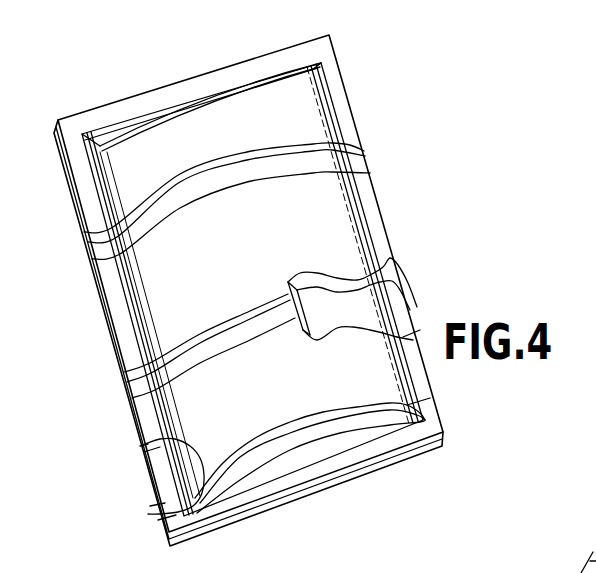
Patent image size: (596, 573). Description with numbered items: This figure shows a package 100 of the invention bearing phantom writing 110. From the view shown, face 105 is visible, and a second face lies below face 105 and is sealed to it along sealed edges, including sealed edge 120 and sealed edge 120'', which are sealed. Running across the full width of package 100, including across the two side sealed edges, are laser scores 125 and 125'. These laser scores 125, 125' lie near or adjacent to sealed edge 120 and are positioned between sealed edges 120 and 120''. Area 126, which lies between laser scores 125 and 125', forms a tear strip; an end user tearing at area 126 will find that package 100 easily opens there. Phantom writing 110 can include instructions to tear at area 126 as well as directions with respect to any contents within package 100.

The package 100 is at (362, 106).
The face 105 is at (127, 176).
The phantom writing 110 is at (339, 243).
The sealed edge 120 is at (282, 335).
The sealed edge 120'' is at (210, 83).
The laser score 125 is at (147, 476).
The laser score 125' is at (138, 542).
The tear strip area 126 is at (383, 391).